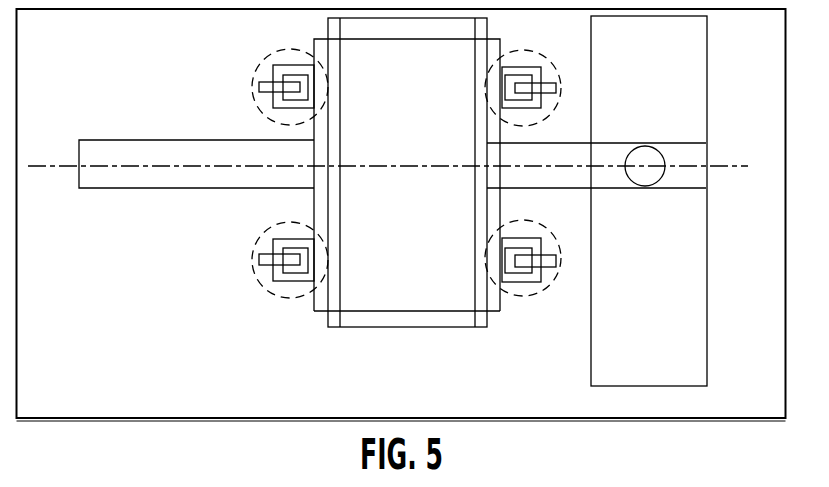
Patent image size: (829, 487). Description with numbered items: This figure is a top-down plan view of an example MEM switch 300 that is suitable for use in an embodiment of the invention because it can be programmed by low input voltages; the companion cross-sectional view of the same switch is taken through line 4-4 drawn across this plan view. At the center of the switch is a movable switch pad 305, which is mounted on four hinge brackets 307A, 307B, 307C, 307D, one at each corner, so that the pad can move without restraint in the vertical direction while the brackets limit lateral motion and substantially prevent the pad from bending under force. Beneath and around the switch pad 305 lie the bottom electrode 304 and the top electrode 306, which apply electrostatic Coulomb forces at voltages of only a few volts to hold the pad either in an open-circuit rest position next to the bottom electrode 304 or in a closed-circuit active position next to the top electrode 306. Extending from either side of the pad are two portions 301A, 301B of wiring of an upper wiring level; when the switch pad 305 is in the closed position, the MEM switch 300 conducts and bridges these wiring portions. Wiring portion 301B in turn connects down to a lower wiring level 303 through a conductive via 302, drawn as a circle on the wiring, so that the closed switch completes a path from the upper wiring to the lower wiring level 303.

The MEM switch 300 is at (155, 46).
The line 4- 4 is at (52, 235).
The wiring portion 301A is at (135, 152).
The wiring portion 301B is at (570, 175).
The conductive via 302 is at (645, 177).
The lower wiring level 303 is at (690, 69).
The bottom electrode 304 is at (467, 33).
The movable switch pad 305 is at (320, 48).
The top electrode 306 is at (322, 305).
The hinge bracket 307A is at (262, 272).
The hinge bracket 307B is at (257, 97).
The hinge bracket 307C is at (552, 275).
The hinge bracket 307D is at (552, 99).